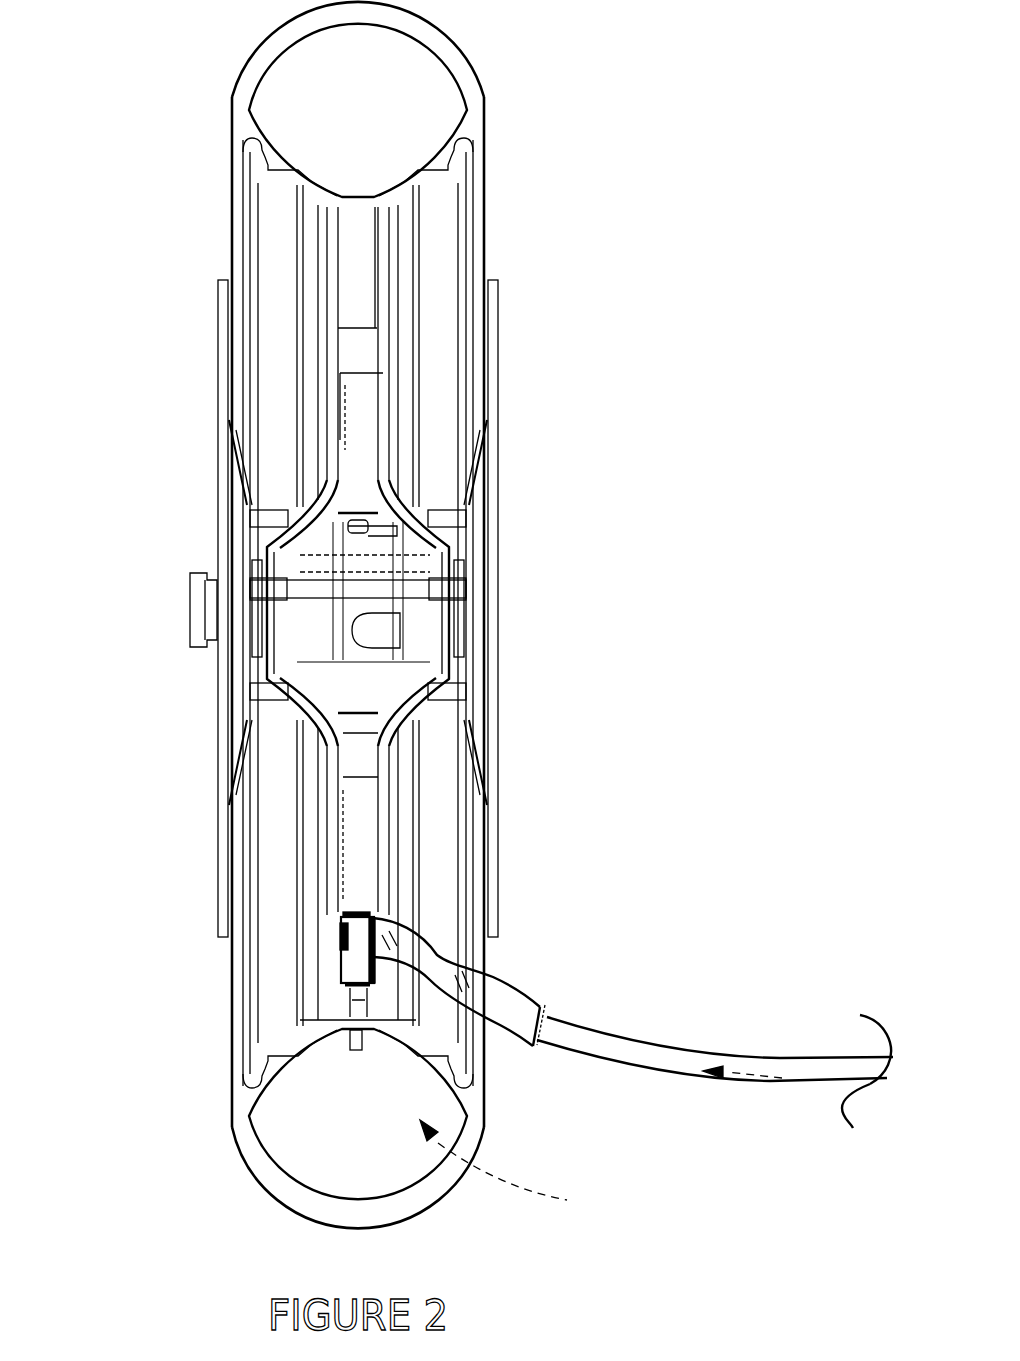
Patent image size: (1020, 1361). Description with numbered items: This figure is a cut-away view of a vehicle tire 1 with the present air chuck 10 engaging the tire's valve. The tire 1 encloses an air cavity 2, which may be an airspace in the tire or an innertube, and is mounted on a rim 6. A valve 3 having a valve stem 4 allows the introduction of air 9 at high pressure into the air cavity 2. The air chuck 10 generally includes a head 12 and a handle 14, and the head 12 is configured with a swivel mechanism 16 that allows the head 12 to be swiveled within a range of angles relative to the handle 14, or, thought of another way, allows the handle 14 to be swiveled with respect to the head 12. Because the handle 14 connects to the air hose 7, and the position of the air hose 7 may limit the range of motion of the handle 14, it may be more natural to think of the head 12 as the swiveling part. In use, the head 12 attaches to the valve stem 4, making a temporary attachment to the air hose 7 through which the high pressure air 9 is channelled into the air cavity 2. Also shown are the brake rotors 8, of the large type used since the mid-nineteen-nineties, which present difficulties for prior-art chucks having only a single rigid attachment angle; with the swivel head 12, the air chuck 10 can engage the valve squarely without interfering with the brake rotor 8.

The tire 1 is at (262, 1153).
The air cavity 2 is at (365, 1143).
The valve 3 is at (363, 1040).
The valve stem 4 is at (352, 997).
The rim 6 is at (453, 1083).
The air hose 7 is at (653, 1065).
The brake rotor 8 is at (493, 908).
The air 9 is at (784, 1079).
The air chuck 10 is at (322, 947).
The head 12 is at (352, 932).
The handle 14 is at (537, 1007).
The swivel mechanism 16 is at (367, 913).